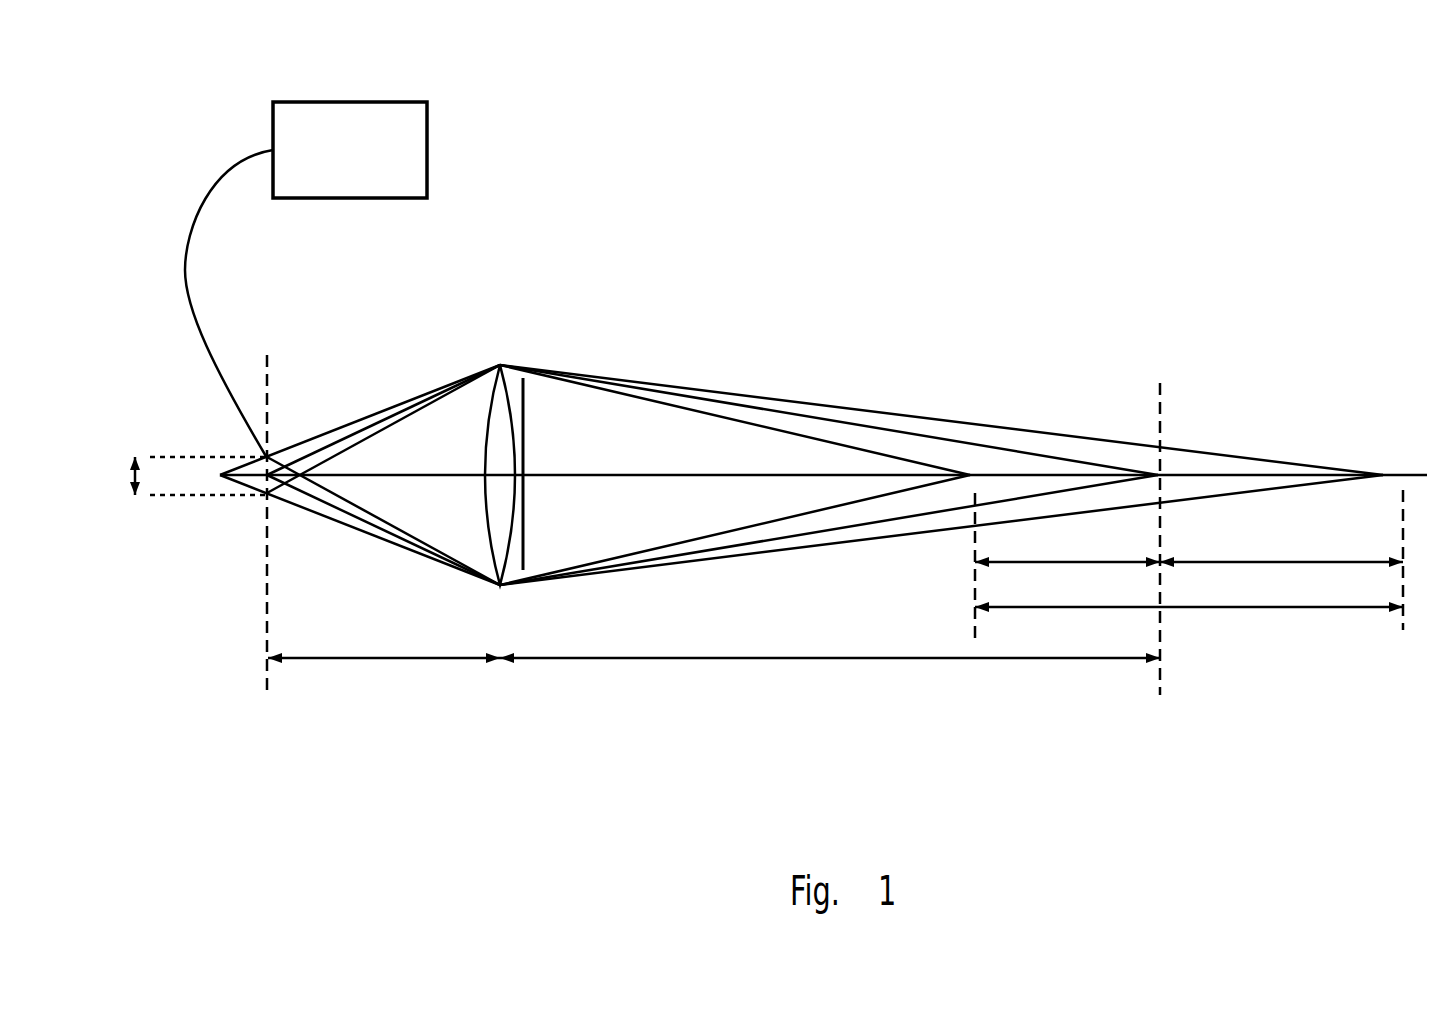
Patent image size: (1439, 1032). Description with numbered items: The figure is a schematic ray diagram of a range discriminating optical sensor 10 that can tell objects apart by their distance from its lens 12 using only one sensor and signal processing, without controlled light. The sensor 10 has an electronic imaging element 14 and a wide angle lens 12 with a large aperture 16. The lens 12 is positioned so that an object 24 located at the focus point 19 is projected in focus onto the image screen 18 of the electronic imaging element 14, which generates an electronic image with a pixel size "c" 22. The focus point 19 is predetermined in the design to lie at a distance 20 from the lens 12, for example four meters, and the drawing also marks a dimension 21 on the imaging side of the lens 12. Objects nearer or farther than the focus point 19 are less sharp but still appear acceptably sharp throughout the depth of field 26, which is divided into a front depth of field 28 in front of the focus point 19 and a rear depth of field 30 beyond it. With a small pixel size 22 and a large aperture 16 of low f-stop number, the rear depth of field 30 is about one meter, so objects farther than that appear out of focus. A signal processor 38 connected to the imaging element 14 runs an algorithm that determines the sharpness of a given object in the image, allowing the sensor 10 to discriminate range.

The range discriminating optical sensor 10 is at (1162, 203).
The lens 12 is at (510, 385).
The electronic imaging element 14 is at (302, 404).
The aperture 16 is at (527, 432).
The image screen 18 is at (268, 395).
The focus point 19 is at (1162, 474).
The distance 20 is at (770, 658).
The object distance 21 is at (387, 660).
The pixel size 22 is at (163, 497).
The object 24 is at (1163, 410).
The depth of field 26 is at (1277, 607).
The front depth of field 28 is at (1066, 562).
The rear depth of field 30 is at (1277, 562).
The signal processor 38 is at (364, 165).